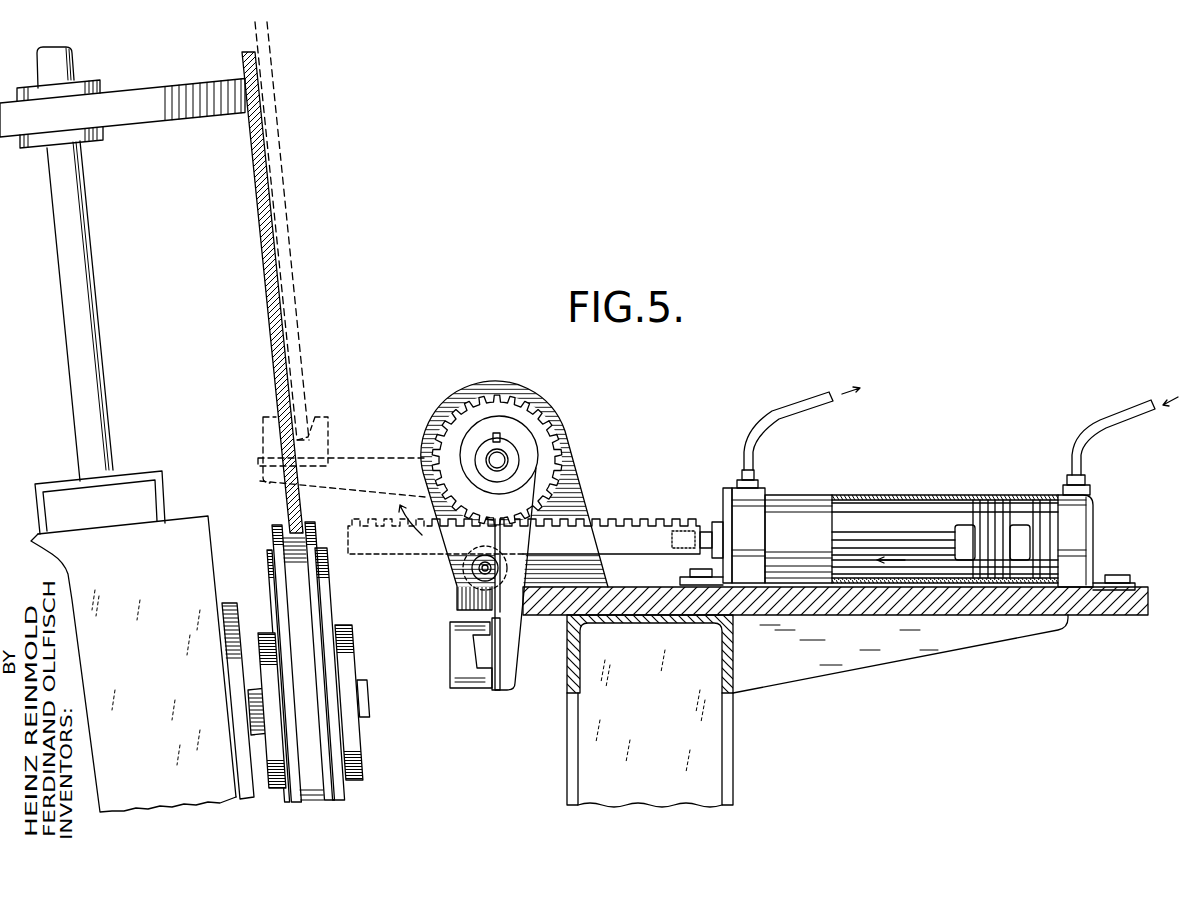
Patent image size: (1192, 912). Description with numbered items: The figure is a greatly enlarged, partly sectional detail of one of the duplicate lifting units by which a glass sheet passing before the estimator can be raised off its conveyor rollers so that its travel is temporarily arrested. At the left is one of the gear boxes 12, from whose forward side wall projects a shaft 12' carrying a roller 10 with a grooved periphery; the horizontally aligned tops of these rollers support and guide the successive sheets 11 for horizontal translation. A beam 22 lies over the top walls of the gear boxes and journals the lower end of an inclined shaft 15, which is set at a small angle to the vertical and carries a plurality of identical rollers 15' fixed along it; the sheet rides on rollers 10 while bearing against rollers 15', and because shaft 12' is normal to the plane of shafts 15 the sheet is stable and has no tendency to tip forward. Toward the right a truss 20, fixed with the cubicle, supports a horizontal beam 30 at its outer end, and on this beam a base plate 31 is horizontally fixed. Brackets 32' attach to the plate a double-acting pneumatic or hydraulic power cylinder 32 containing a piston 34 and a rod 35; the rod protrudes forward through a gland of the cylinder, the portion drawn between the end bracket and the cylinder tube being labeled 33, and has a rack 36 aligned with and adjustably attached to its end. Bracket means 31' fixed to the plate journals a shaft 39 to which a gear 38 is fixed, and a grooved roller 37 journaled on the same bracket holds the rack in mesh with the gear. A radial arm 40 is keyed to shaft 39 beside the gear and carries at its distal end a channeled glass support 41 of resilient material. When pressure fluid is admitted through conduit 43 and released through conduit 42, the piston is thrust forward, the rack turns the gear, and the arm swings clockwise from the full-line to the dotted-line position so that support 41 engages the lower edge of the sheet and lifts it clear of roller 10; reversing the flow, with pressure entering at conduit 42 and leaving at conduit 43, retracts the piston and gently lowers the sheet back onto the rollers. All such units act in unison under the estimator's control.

The roller 10 is at (320, 605).
The sheet 11 is at (259, 221).
The gear box 12 is at (150, 640).
The shaft 12' is at (387, 704).
The shaft 15 is at (92, 264).
The roller 15' is at (122, 117).
The truss 20 is at (718, 660).
The beam 22 is at (137, 468).
The horizontal beam 30 is at (652, 620).
The base plate 31 is at (835, 626).
The bracket means 31' is at (510, 495).
The power cylinder 32 is at (945, 518).
The bracket 32' is at (908, 524).
The cylinder head 33 is at (812, 503).
The piston 34 is at (980, 503).
The rod 35 is at (833, 540).
The rack 36 is at (642, 532).
The grooved roller 37 is at (463, 572).
The gear 38 is at (545, 442).
The shaft 39 is at (487, 452).
The radial arm 40 is at (365, 458).
The channeled glass support 41 is at (325, 417).
The conduit 42 is at (783, 423).
The conduit 43 is at (1105, 430).